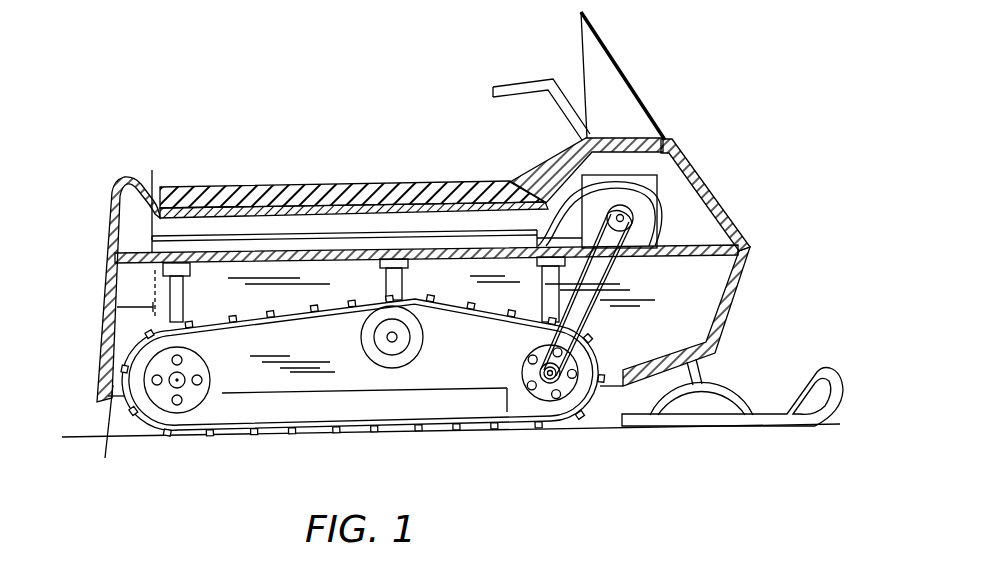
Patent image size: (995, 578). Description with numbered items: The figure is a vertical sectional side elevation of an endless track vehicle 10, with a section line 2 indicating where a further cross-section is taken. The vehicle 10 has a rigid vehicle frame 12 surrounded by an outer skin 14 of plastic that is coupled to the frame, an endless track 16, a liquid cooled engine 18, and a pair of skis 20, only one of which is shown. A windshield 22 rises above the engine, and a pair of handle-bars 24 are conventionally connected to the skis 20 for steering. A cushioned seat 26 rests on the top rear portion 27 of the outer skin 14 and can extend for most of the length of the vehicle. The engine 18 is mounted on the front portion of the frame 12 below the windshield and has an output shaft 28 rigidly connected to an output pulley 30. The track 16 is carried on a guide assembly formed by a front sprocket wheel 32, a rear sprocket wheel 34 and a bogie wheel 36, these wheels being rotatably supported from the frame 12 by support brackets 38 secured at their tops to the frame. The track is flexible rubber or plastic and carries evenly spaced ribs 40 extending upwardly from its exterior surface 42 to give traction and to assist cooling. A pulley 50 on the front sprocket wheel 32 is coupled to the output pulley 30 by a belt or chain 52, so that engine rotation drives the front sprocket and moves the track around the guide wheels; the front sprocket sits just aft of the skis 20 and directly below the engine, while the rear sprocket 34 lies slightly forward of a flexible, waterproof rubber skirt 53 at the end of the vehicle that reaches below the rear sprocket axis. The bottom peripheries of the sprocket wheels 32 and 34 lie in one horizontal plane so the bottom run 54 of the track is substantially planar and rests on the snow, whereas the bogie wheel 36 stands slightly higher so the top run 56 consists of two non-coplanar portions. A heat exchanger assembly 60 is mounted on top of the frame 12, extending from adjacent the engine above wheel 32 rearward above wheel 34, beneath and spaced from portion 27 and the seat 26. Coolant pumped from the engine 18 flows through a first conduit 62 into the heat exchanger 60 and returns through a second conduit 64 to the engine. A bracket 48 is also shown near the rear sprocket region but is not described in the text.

The section line 2 is at (184, 178).
The endless track vehicle 10 is at (708, 178).
The vehicle frame 12 is at (710, 237).
The outer skin 14 is at (695, 160).
The endless track 16 is at (614, 346).
The liquid cooled engine 18 is at (649, 161).
The skis 20 is at (758, 401).
The windshield 22 is at (637, 87).
The handle-bars 24 is at (498, 88).
The cushioned seat 26 is at (375, 181).
The top rear portion of the outer skin 27 is at (352, 202).
The output shaft 28 is at (633, 218).
The output pulley 30 is at (630, 232).
The front sprocket wheel 32 is at (567, 408).
The rear sprocket wheel 34 is at (208, 408).
The bogie wheel 36 is at (417, 340).
The support brackets 38 is at (186, 277).
The spaced ribs 40 is at (457, 434).
The exterior surface of the track 42 is at (309, 299).
The rear axle bracket 48 is at (506, 412).
The pulley 50 is at (516, 353).
The belt or chain 52 is at (594, 291).
The flexible waterproof skirt 53 is at (105, 310).
The bottom run 54 is at (477, 441).
The top run 56 is at (424, 295).
The heat exchanger assembly 60 is at (300, 224).
The first conduit 62 is at (575, 197).
The second conduit 64 is at (621, 190).